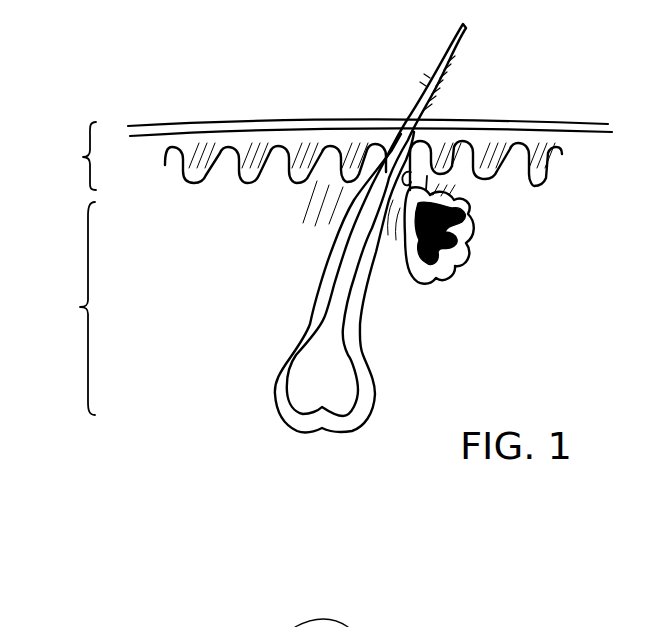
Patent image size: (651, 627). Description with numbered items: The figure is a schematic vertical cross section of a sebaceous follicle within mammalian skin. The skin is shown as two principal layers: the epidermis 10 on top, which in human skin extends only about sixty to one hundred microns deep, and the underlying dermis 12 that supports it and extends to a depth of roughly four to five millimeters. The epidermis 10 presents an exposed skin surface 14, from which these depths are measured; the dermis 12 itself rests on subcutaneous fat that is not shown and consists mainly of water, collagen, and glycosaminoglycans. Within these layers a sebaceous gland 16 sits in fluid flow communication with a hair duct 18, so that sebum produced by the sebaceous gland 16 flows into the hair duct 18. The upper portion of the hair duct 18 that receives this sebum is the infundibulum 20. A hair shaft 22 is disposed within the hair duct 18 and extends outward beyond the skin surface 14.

The epidermis 10 is at (82, 157).
The dermis 12 is at (80, 307).
The skin surface 14 is at (334, 114).
The sebaceous gland 16 is at (467, 250).
The hair duct 18 is at (329, 257).
The infundibulum 20 is at (427, 128).
The hair shaft 22 is at (352, 289).